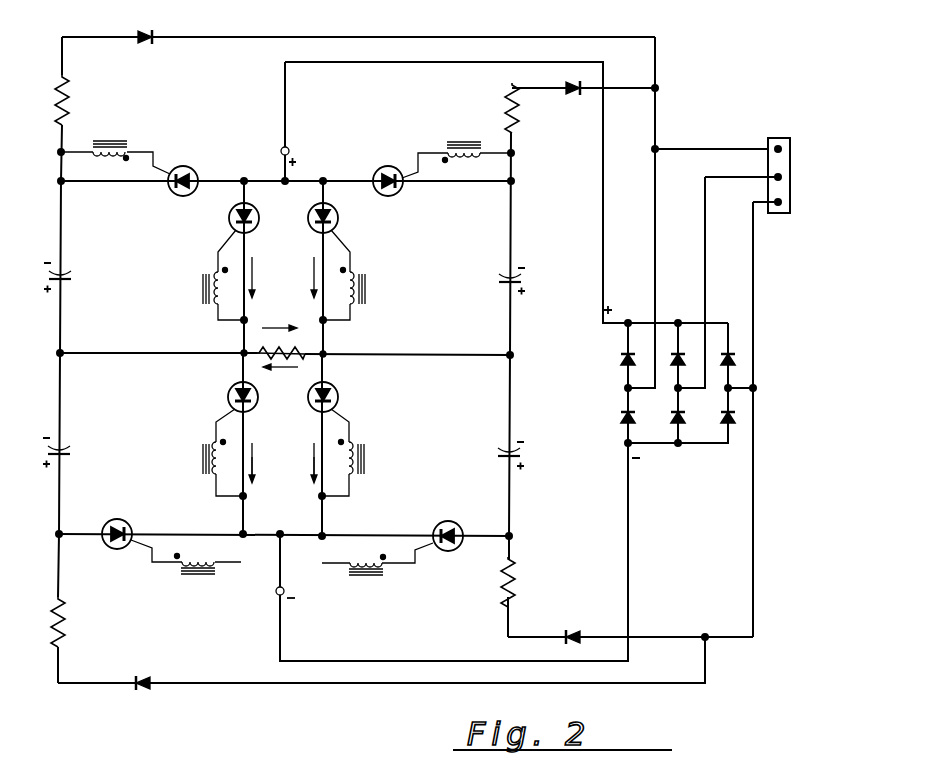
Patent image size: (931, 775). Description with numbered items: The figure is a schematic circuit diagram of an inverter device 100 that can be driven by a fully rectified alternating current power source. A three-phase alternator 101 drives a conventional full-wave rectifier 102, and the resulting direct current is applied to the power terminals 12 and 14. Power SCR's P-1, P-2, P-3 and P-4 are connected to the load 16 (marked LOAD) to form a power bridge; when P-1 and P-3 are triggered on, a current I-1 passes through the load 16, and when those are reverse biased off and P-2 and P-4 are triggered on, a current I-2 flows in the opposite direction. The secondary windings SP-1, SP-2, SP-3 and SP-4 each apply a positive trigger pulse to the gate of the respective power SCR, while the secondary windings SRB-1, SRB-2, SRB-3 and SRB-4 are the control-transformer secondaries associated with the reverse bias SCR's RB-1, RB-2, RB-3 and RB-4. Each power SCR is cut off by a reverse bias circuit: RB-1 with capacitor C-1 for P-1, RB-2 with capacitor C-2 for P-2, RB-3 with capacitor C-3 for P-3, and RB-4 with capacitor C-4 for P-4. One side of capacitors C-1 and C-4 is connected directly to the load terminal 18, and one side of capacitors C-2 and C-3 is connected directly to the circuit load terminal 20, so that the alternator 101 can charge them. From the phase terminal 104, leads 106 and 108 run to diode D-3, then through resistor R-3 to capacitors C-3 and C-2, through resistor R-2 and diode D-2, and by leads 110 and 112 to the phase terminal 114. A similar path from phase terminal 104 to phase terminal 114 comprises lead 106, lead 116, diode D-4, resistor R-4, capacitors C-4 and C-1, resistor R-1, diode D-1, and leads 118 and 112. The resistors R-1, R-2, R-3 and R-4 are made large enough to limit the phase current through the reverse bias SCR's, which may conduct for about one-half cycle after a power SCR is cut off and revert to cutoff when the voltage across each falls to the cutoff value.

The power terminal 12 is at (289, 147).
The power terminal 14 is at (276, 595).
The load 16 is at (300, 350).
The load terminal 18 is at (241, 348).
The circuit load terminal 20 is at (329, 350).
The inverter device 100 is at (675, 99).
The alternator 101 is at (770, 172).
The full-wave rectifier 102 is at (622, 375).
The phase terminal 104 is at (768, 215).
The lead 106 is at (755, 588).
The lead 108 is at (644, 636).
The lead 110 is at (636, 94).
The lead 112 is at (686, 148).
The phase terminal 114 is at (782, 138).
The lead 116 is at (350, 684).
The lead 118 is at (384, 38).
The diode D-1 is at (147, 44).
The diode D-2 is at (567, 82).
The diode D-3 is at (575, 631).
The diode D-4 is at (147, 669).
The resistor R-1 is at (75, 106).
The resistor R-2 is at (527, 107).
The resistor R-3 is at (519, 582).
The resistor R-4 is at (74, 618).
The capacitor C-1 is at (67, 268).
The capacitor C-2 is at (502, 272).
The capacitor C-3 is at (501, 447).
The capacitor C-4 is at (66, 443).
The reverse bias SCR RB-1 is at (205, 157).
The reverse bias SCR RB-2 is at (390, 166).
The reverse bias SCR RB-3 is at (444, 521).
The reverse bias SCR RB-4 is at (126, 521).
The secondary winding SRB-1 is at (147, 140).
The secondary winding SRB-2 is at (455, 140).
The secondary winding SRB-3 is at (385, 572).
The secondary winding SRB-4 is at (173, 576).
The power SCR P-1 is at (229, 216).
The power SCR P-2 is at (338, 214).
The power SCR P-3 is at (338, 393).
The power SCR P-4 is at (228, 395).
The secondary winding SP-1 is at (210, 268).
The secondary winding SP-2 is at (360, 264).
The secondary winding SP-3 is at (360, 439).
The secondary winding SP-4 is at (208, 441).
The current I-1 is at (283, 370).
The current I-2 is at (283, 370).
The load LOAD is at (294, 333).